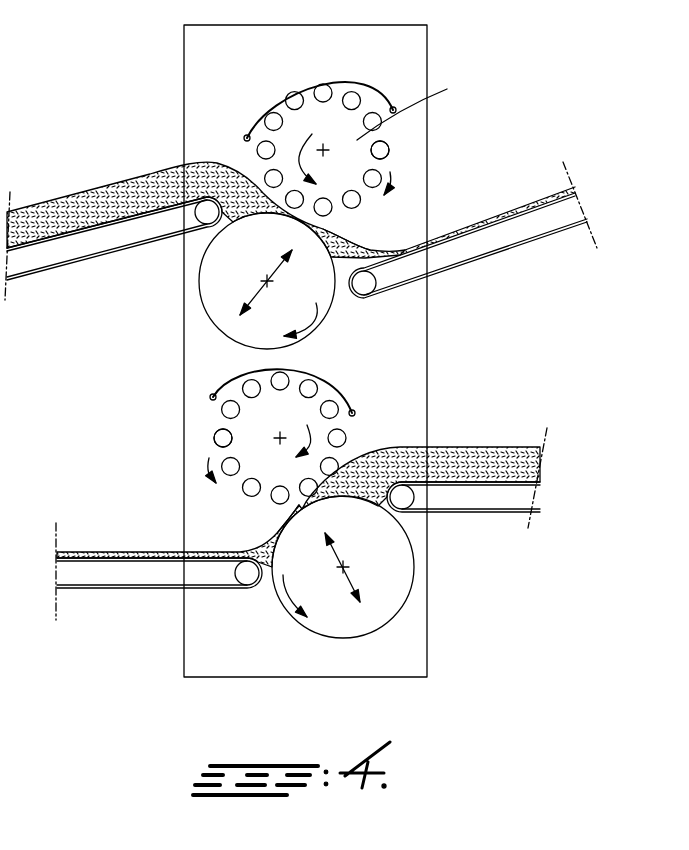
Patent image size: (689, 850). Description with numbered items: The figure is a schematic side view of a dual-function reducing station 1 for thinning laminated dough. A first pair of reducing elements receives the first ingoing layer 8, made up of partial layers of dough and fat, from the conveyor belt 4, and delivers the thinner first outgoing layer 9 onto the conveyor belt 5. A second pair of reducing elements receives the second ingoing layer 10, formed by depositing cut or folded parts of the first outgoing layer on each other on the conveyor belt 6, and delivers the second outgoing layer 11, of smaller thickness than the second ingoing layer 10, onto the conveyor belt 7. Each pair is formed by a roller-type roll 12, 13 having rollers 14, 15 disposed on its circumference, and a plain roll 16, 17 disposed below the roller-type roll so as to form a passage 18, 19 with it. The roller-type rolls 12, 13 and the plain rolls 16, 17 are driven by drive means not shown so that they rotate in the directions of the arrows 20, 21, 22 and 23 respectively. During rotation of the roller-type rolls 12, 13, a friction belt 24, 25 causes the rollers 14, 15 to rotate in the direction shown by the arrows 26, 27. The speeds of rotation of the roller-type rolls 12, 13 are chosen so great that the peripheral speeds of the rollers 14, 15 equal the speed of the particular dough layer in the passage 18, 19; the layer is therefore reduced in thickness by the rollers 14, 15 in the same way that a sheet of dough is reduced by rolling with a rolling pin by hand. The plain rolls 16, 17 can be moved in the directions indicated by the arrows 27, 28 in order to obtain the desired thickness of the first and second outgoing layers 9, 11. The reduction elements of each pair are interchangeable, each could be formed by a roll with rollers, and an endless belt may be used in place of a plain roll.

The reducing station 1 is at (378, 25).
The conveyor belt 4 is at (27, 250).
The conveyor belt 5 is at (443, 244).
The conveyor belt 6 is at (500, 513).
The conveyor belt 7 is at (160, 560).
The first ingoing layer 8 is at (55, 212).
The first outgoing layer 9 is at (453, 233).
The second ingoing layer 10 is at (486, 450).
The second outgoing layer 11 is at (127, 553).
The roller-type roll 12 is at (414, 105).
The roller-type roll 13 is at (257, 424).
The rollers 14 is at (381, 153).
The rollers 15 is at (223, 438).
The plain roll 16 is at (212, 291).
The plain roll 17 is at (400, 585).
The passage 18 is at (338, 227).
The passage 19 is at (284, 514).
The arrow 20 is at (323, 150).
The arrow 21 is at (289, 448).
The arrow 22 is at (321, 318).
The arrow 23 is at (286, 606).
The friction belt 24 is at (281, 102).
The friction belt 25 is at (328, 390).
The arrow 26 is at (396, 182).
The arrow 27 is at (262, 288).
The arrow 28 is at (342, 554).